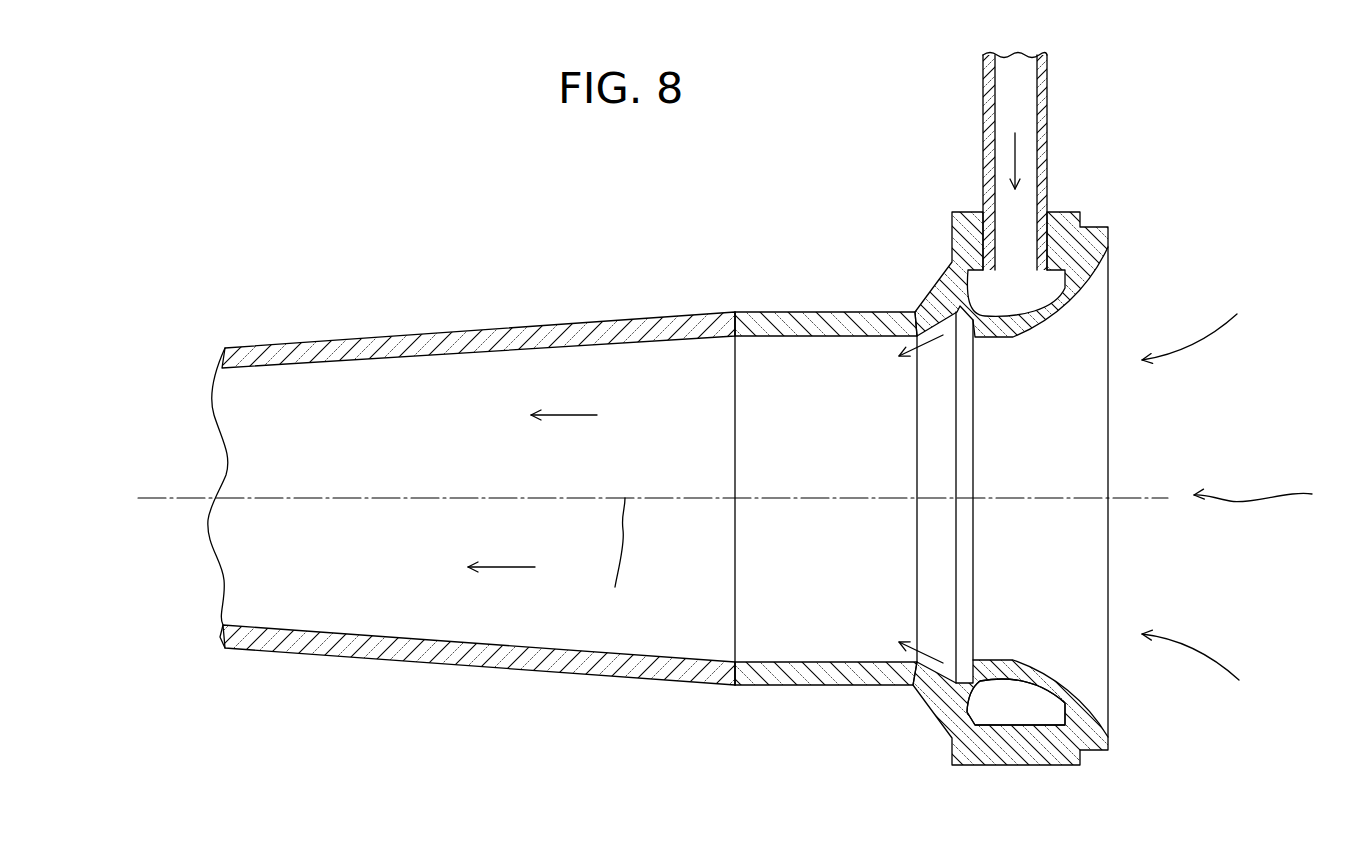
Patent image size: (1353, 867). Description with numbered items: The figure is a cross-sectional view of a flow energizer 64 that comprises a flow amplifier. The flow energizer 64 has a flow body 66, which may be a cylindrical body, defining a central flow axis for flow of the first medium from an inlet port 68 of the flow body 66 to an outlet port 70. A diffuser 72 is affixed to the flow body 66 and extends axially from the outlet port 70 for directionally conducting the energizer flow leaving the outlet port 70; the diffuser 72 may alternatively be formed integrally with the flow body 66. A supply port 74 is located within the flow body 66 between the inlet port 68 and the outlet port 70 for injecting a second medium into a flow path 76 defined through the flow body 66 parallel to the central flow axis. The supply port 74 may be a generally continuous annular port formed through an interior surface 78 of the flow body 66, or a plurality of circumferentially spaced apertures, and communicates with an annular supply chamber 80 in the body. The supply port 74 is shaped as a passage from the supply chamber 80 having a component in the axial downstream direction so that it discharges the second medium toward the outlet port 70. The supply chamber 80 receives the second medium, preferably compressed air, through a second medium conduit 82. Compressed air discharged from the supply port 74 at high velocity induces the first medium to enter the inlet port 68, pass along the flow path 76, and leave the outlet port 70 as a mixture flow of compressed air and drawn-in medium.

The flow energizer 64 is at (652, 287).
The flow body 66 is at (973, 766).
The inlet port 68 is at (1108, 297).
The outlet port 70 is at (806, 662).
The diffuser 72 is at (435, 333).
The supply port 74 is at (965, 303).
The flow path 76 is at (1035, 598).
The interior surface 78 is at (973, 337).
The annular supply chamber 80 is at (1017, 709).
The second medium conduit 82 is at (1047, 172).